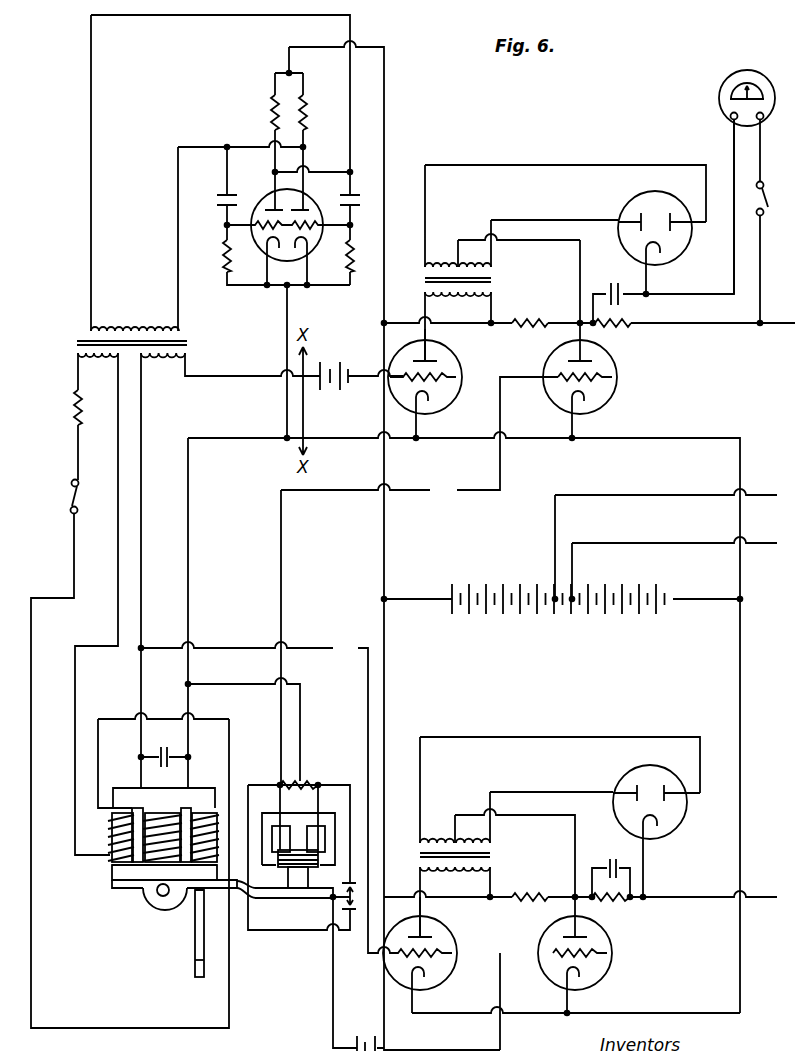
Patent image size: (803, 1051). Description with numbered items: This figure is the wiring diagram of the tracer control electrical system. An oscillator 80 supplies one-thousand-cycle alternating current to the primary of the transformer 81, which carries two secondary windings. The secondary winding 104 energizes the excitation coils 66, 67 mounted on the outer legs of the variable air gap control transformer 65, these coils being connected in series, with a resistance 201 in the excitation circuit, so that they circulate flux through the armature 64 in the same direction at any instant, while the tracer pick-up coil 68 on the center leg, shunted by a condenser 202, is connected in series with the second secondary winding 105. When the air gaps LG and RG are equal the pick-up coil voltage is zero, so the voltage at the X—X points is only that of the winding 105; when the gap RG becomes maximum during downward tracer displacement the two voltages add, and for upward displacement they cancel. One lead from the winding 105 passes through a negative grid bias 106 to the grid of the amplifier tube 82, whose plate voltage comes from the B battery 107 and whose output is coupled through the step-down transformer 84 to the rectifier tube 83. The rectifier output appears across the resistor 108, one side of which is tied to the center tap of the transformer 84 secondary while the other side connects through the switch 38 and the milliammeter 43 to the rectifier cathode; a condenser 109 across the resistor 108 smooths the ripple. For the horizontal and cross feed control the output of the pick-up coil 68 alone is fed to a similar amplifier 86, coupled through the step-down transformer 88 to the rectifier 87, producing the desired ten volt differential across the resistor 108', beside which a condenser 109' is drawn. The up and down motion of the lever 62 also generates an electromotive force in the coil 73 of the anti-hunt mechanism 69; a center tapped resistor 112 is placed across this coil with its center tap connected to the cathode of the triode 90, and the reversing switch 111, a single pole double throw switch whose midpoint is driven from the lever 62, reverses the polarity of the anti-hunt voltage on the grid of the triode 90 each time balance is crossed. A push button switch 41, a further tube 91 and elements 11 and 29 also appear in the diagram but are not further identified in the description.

The oscillator 80 is at (264, 204).
The transformer 81 is at (68, 348).
The secondary winding 104 is at (102, 360).
The second secondary winding 105 is at (182, 360).
The resistance 201 is at (69, 416).
The push button switch 41 is at (64, 492).
The negative grid bias 106 is at (361, 339).
The amplifier tube 82 is at (463, 361).
The amplifier tube 91 is at (622, 392).
The rectifier tube 83 is at (620, 212).
The step-down transformer 84 is at (423, 284).
The condenser 109 is at (613, 278).
The resistor 108 is at (632, 336).
The indicator meter 43 is at (712, 102).
The push button switch 38 is at (772, 196).
The B battery 107 is at (532, 628).
The condenser 202 is at (172, 737).
The control transformer 65 is at (128, 784).
The left hand coil 66 is at (110, 842).
The tracer pick-up coil 68 is at (179, 817).
The right hand coil 67 is at (240, 843).
The relay device 11 is at (102, 905).
The armature 64 is at (148, 879).
The pointer 29 is at (194, 964).
The lever 62 is at (270, 886).
The coil 73 is at (304, 844).
The anti-hunt mechanism 69 is at (344, 807).
The center tapped resistor 112 is at (306, 780).
The reversing switch 111 is at (354, 925).
The step-down transformer 88 is at (418, 858).
The rectifier 87 is at (690, 830).
The condenser 109' is at (608, 865).
The resistor 108' is at (634, 911).
The amplifier 86 is at (457, 945).
The triode 90 is at (617, 956).
The air gap LG is at (109, 877).
The air gap RG is at (205, 870).